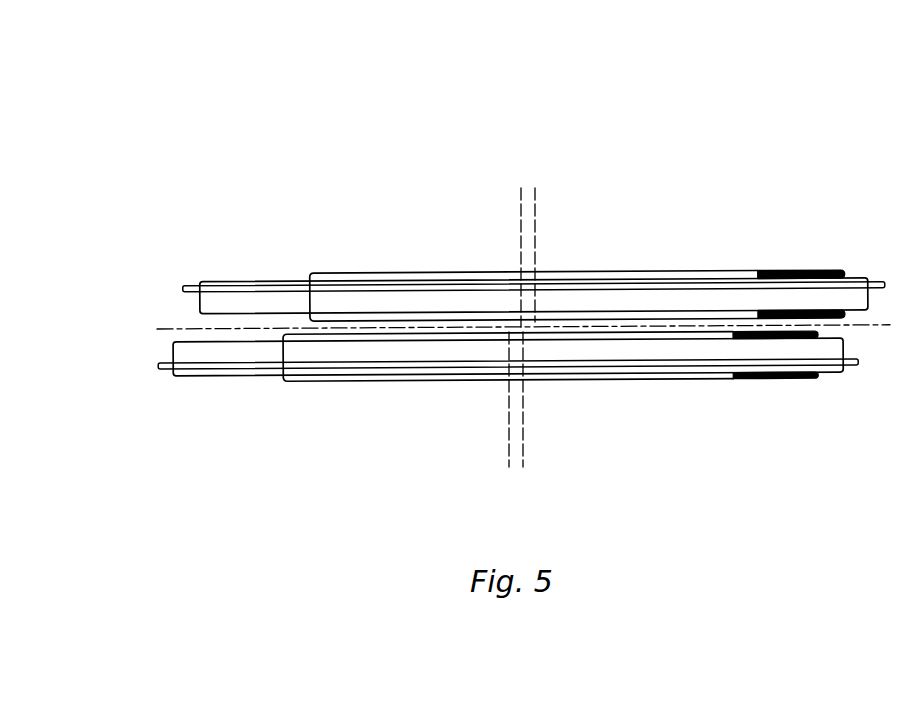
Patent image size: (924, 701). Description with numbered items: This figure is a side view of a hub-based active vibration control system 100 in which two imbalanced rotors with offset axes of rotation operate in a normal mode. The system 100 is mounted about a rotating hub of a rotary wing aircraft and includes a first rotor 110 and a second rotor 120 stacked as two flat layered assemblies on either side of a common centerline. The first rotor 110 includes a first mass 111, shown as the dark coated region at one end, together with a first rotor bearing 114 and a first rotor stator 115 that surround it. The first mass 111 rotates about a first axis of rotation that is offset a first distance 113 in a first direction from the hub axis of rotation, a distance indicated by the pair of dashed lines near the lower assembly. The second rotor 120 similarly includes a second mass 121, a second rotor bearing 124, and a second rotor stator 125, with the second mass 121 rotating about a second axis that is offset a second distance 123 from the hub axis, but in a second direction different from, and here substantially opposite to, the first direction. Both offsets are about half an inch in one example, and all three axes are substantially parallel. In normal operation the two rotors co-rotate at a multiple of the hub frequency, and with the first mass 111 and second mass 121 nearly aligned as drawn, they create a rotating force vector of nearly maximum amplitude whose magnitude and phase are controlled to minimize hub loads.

The active vibration control system 100 is at (523, 268).
The first rotor 110 is at (515, 414).
The first mass 111 is at (780, 380).
The first distance 113 is at (545, 456).
The first rotor bearing 114 is at (232, 377).
The first rotor stator 115 is at (388, 380).
The second rotor 120 is at (523, 240).
The second mass 121 is at (803, 270).
The second distance 123 is at (500, 198).
The second rotor bearing 124 is at (240, 280).
The second rotor stator 125 is at (383, 270).